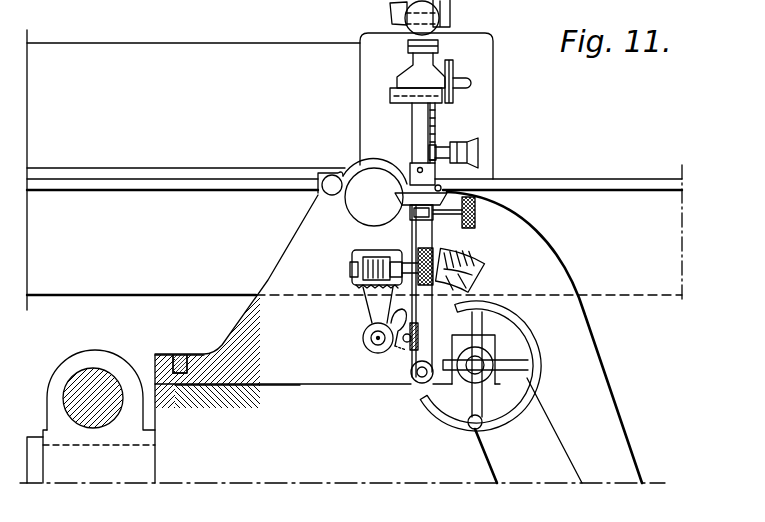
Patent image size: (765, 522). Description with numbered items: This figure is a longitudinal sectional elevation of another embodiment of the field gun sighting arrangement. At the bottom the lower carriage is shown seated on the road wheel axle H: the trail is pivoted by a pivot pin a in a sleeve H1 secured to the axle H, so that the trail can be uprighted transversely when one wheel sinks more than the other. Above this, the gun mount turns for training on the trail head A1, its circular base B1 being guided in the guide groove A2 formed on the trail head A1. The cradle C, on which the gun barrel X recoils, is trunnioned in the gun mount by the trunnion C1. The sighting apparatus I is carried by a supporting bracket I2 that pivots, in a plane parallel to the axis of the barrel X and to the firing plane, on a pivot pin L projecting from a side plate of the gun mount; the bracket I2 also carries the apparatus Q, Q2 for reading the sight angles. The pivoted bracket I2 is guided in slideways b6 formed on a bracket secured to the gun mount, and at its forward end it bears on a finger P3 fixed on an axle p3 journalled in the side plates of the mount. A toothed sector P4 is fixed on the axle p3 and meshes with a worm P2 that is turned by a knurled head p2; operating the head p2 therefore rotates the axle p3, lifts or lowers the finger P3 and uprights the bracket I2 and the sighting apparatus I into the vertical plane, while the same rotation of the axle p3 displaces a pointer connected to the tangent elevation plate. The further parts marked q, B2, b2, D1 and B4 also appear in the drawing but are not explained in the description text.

The gun barrel X is at (242, 55).
The sighting apparatus I is at (418, 62).
The supporting bracket I2 is at (418, 128).
The sight angle reading apparatus Q2 is at (415, 187).
The sight angle reading apparatus Q is at (410, 220).
The trunnion C1 is at (365, 180).
The knurled adjusting knob q is at (476, 222).
The worm P2 is at (357, 258).
The toothed sector P4 is at (372, 303).
The finger P3 is at (372, 320).
The axle p3 is at (377, 340).
The slideways b6 is at (443, 283).
The toothed sector B2 is at (457, 262).
The sector teeth b2 is at (480, 274).
The knurled head p2 is at (440, 262).
The wheel D1 is at (535, 365).
The trail head A1 is at (472, 462).
The pivot pin L is at (412, 385).
The frame outline B4 is at (605, 405).
The cradle C is at (176, 285).
The road wheel axle H is at (105, 382).
The sleeve H1 is at (55, 415).
The pivot pin a is at (37, 475).
The circular base B1 is at (202, 367).
The guide groove A2 is at (177, 363).